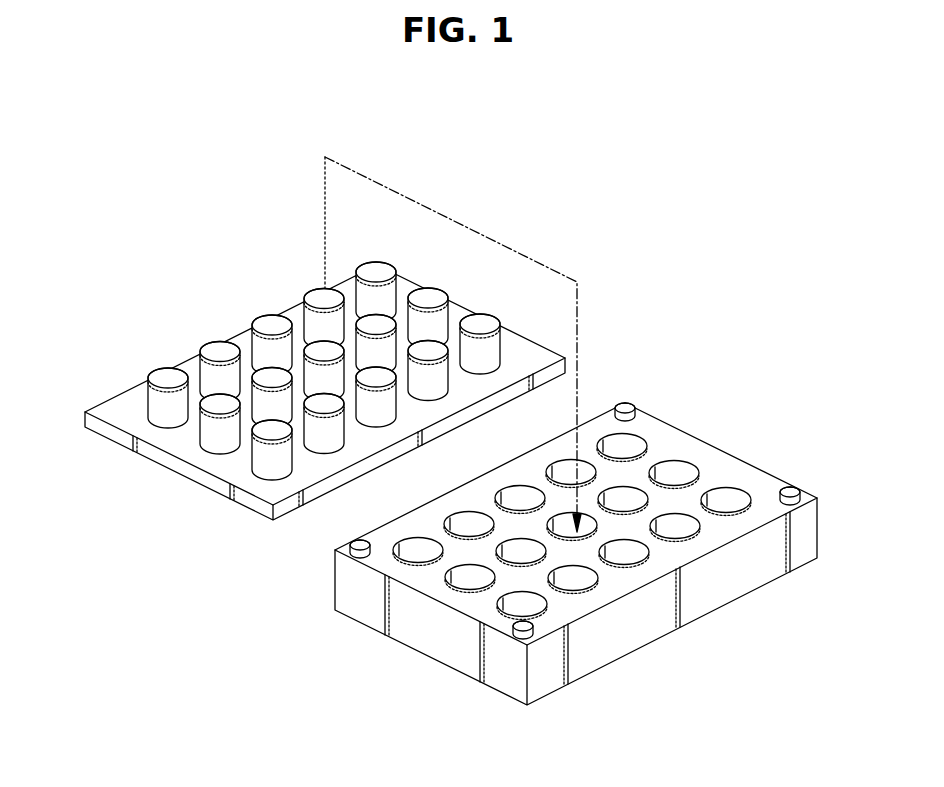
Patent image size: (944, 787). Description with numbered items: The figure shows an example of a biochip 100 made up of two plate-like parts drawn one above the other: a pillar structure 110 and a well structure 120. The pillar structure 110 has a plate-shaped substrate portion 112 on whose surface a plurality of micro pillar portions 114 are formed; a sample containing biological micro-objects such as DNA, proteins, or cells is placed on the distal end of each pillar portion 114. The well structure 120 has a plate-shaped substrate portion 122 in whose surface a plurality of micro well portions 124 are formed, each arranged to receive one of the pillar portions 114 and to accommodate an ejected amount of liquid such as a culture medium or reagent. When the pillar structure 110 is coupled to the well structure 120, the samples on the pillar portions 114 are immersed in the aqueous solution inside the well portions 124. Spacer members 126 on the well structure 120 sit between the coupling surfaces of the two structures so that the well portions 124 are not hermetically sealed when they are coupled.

The biochip 100 is at (257, 133).
The pillar structure 110 is at (180, 490).
The substrate portion 112 is at (524, 352).
The pillar portions 114 is at (461, 331).
The well structure 120 is at (432, 675).
The substrate portion 122 is at (754, 477).
The well portions 124 is at (688, 470).
The spacer members 126 is at (630, 404).